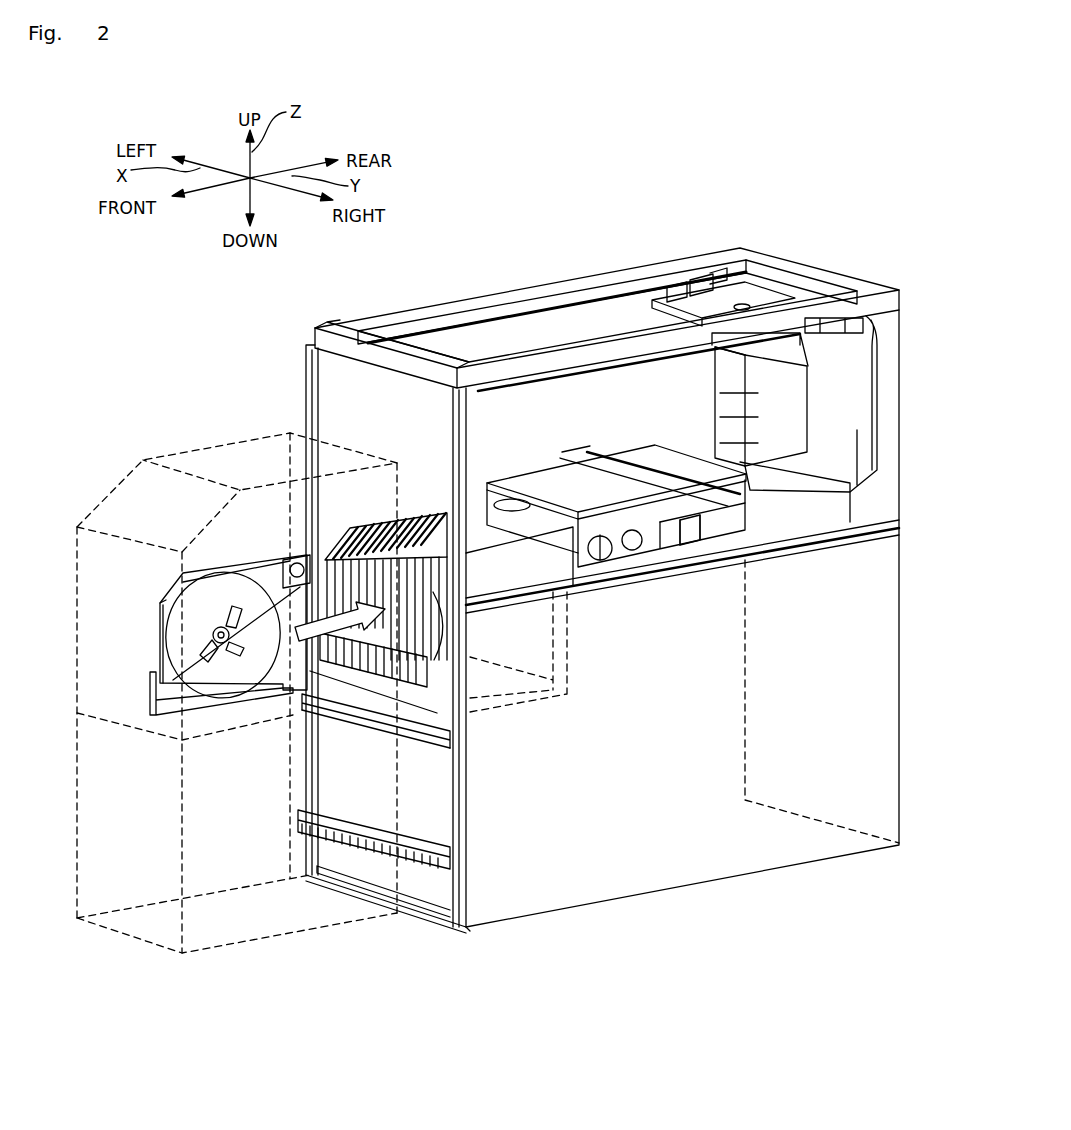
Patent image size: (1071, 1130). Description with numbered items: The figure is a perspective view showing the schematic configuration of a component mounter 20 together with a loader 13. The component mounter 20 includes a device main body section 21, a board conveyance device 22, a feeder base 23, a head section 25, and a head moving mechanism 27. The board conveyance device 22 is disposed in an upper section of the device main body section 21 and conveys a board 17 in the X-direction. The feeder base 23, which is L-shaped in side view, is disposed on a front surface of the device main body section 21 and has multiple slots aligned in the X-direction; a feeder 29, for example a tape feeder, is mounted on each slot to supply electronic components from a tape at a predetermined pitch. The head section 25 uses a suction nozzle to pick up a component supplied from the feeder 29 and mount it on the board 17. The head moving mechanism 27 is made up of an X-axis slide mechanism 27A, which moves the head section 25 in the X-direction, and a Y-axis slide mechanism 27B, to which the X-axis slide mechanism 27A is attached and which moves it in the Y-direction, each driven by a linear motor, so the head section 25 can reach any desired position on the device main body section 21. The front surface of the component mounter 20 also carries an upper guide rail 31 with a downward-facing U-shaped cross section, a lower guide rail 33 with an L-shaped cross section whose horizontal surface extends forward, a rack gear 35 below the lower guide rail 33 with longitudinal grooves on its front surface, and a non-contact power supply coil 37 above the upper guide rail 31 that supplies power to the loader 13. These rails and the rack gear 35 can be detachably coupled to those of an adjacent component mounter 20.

The loader 13 is at (158, 386).
The board 17 is at (606, 458).
The component mounter 20 is at (824, 223).
The device main body section 21 is at (878, 713).
The board conveyance device 22 is at (700, 563).
The feeder base 23 is at (540, 700).
The head section 25 is at (812, 412).
The head moving mechanism 27 is at (708, 278).
The X-axis slide mechanism 27A is at (728, 303).
The Y-axis slide mechanism 27B is at (690, 290).
The feeder 29 is at (172, 603).
The upper guide rail 31 is at (445, 752).
The lower guide rail 33 is at (435, 812).
The rack gear 35 is at (422, 862).
The non-contact power supply coil 37 is at (405, 714).